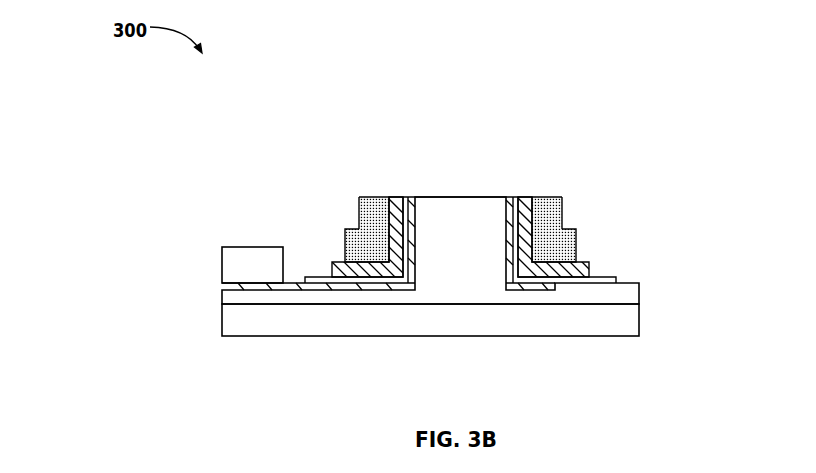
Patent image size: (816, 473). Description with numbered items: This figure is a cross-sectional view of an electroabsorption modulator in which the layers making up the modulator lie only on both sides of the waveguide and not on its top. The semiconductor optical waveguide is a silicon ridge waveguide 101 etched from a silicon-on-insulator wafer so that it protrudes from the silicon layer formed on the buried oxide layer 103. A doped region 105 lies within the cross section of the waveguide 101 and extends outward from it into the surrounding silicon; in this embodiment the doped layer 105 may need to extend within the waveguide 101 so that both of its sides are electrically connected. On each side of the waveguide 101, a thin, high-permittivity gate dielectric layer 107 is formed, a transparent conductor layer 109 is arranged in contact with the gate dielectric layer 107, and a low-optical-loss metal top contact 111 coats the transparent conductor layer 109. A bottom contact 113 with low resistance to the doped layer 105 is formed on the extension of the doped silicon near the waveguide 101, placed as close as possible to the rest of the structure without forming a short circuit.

The silicon ridge waveguide 101 is at (472, 283).
The buried oxide layer 103 is at (393, 323).
The doped region 105 is at (406, 216).
The gate dielectric layer 107 is at (397, 213).
The transparent conductor layer 109 is at (392, 223).
The top contact 111 is at (350, 258).
The bottom contact 113 is at (228, 265).